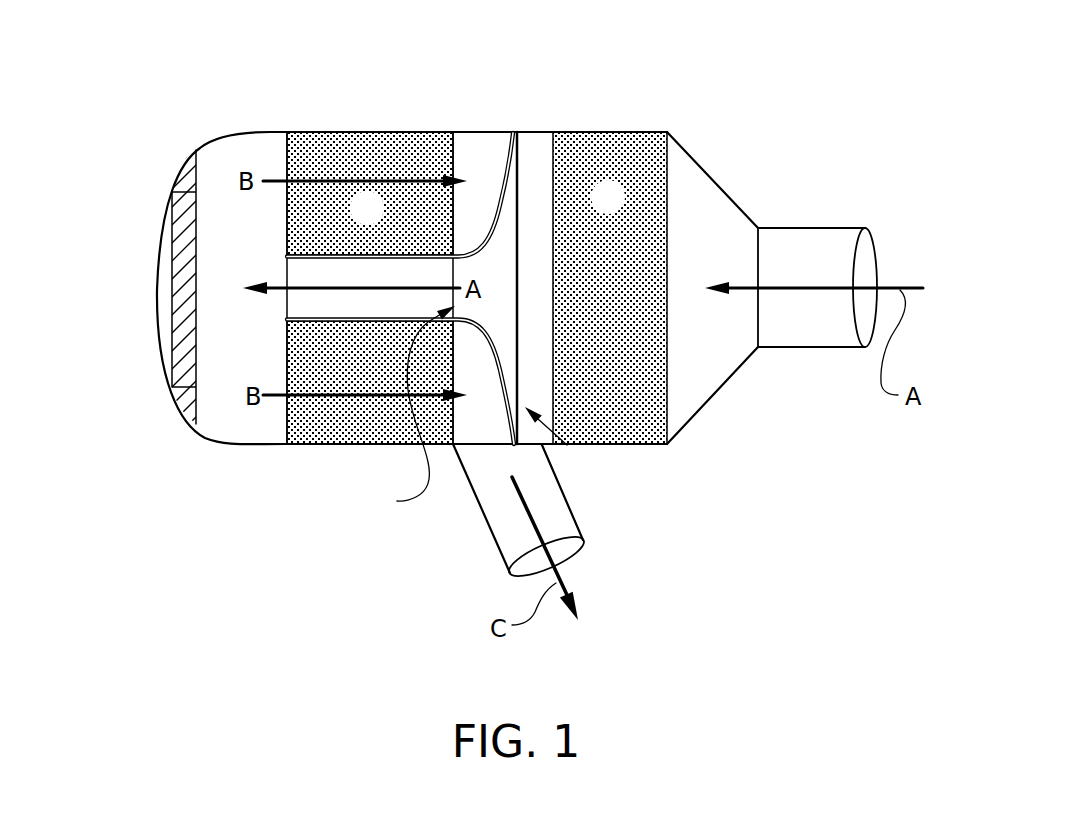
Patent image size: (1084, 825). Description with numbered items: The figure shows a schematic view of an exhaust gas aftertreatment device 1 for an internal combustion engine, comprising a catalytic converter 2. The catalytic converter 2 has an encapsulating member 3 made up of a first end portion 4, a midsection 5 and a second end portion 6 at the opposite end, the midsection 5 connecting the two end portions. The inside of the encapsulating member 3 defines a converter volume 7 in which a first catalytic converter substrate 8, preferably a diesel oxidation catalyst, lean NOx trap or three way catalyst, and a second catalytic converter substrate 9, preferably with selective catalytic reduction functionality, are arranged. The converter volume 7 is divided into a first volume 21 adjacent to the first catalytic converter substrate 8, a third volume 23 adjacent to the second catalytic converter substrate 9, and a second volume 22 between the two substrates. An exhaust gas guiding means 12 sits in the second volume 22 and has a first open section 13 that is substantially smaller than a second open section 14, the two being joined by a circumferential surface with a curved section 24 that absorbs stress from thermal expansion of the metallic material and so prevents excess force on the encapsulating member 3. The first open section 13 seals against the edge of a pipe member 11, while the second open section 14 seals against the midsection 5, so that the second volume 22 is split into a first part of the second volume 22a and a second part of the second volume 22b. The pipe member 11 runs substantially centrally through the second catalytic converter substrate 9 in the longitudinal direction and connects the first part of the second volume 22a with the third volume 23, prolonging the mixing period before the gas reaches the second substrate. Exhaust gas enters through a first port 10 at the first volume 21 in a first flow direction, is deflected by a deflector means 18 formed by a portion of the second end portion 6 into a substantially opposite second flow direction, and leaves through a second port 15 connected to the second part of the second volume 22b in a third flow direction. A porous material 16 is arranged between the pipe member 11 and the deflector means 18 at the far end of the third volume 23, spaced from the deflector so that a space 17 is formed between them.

The exhaust gas aftertreatment device 1 is at (229, 35).
The catalytic converter 2 is at (229, 123).
The encapsulating member 3 is at (746, 182).
The first end portion 4 is at (690, 152).
The midsection 5 is at (467, 132).
The second end portion 6 is at (208, 437).
The converter volume 7 is at (487, 165).
The first catalytic converter substrate 8 is at (616, 210).
The second catalytic converter substrate 9 is at (374, 223).
The first port 10 is at (840, 228).
The pipe member 11 is at (383, 317).
The exhaust gas guiding means 12 is at (515, 278).
The first open section 13 is at (415, 411).
The second open section 14 is at (567, 445).
The second port 15 is at (485, 518).
The porous material 16 is at (187, 279).
The space 17 is at (166, 246).
The deflector means 18 is at (134, 310).
The first volume 21 is at (727, 250).
The second volume 22 is at (487, 383).
The first part of the second volume 22a is at (537, 393).
The second part of the second volume 22b is at (477, 220).
The third volume 23 is at (247, 375).
The curved section 24 is at (493, 232).